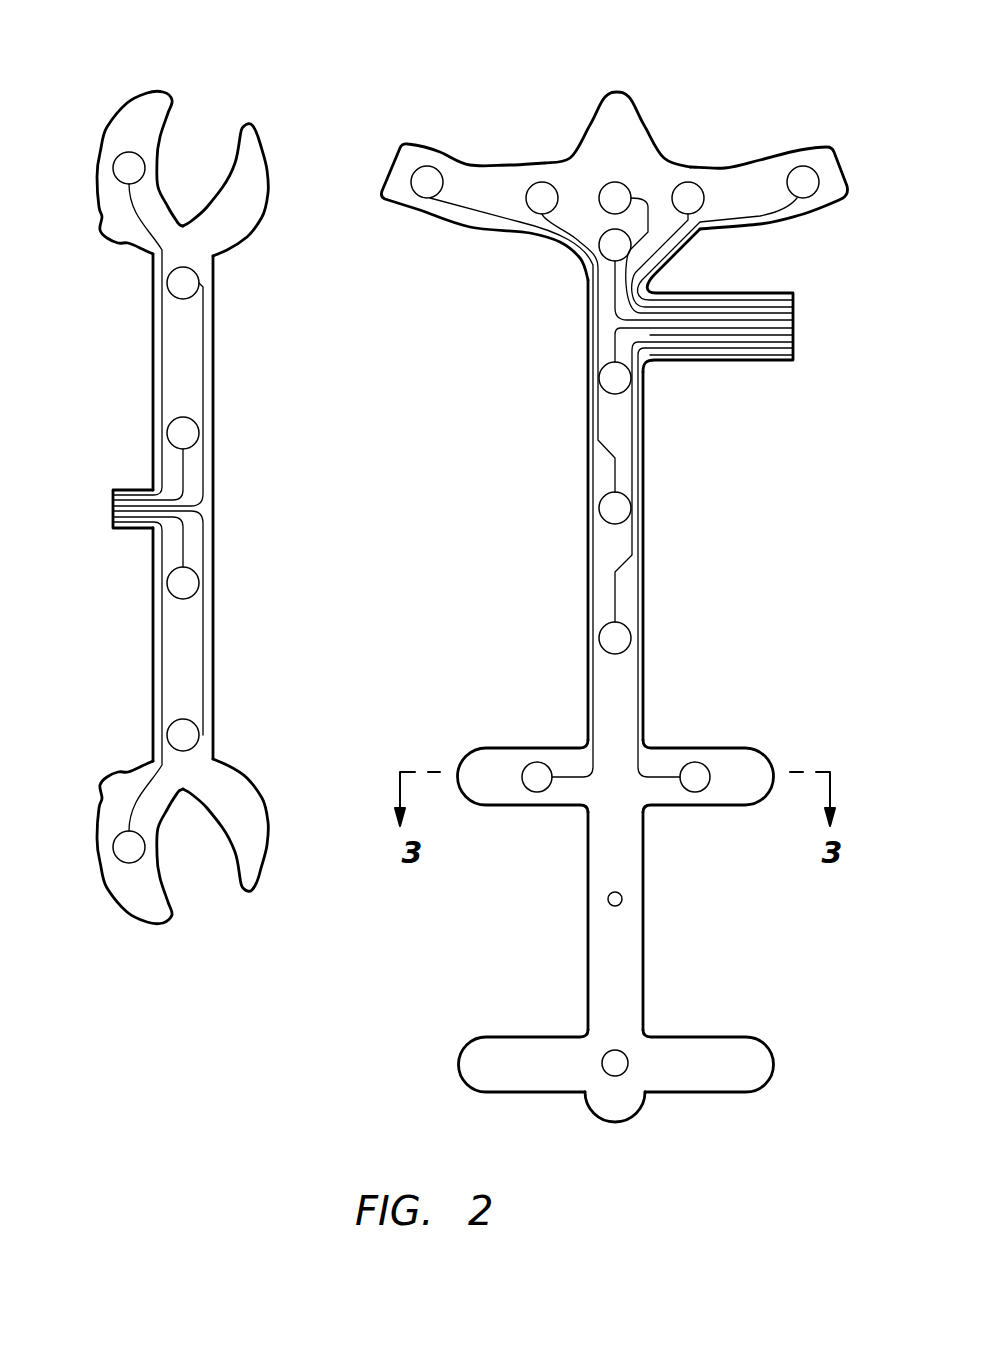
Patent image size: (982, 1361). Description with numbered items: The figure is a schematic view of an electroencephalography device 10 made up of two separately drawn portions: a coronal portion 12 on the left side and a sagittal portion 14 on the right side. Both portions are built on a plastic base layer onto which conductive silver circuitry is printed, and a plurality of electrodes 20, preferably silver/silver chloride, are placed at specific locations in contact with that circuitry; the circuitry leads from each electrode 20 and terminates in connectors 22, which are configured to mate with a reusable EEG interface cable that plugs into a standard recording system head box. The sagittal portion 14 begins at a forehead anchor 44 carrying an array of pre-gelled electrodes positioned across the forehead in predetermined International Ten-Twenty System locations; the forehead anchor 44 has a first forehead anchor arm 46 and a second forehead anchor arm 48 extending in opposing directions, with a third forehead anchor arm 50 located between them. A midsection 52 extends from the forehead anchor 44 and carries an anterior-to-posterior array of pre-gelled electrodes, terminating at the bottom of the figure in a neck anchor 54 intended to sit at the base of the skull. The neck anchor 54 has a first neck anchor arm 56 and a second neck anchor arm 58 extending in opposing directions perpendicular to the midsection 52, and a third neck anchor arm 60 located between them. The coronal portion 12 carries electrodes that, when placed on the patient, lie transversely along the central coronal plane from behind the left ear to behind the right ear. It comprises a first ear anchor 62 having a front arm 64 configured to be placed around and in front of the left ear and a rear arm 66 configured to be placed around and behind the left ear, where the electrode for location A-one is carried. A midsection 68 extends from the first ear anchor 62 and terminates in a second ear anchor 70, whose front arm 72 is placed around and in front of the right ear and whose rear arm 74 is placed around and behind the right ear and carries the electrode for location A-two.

The electroencephalography device 10 is at (320, 507).
The coronal portion 12 is at (158, 369).
The sagittal portion 14 is at (652, 568).
The electrodes 20 is at (607, 636).
The connectors 22 is at (795, 325).
The forehead anchor 44 is at (712, 156).
The first forehead anchor arm 46 is at (478, 178).
The second forehead anchor arm 48 is at (763, 172).
The third forehead anchor arm 50 is at (605, 100).
The midsection 52 is at (625, 683).
The neck anchor 54 is at (657, 1027).
The first neck anchor arm 56 is at (500, 1083).
The second neck anchor arm 58 is at (775, 1075).
The third neck anchor arm 60 is at (625, 1100).
The first ear anchor 62 is at (224, 260).
The front arm 64 is at (258, 160).
The rear arm 66 is at (130, 135).
The midsection 68 is at (193, 474).
The second ear anchor 70 is at (224, 756).
The front arm 72 is at (248, 833).
The rear arm 74 is at (130, 890).